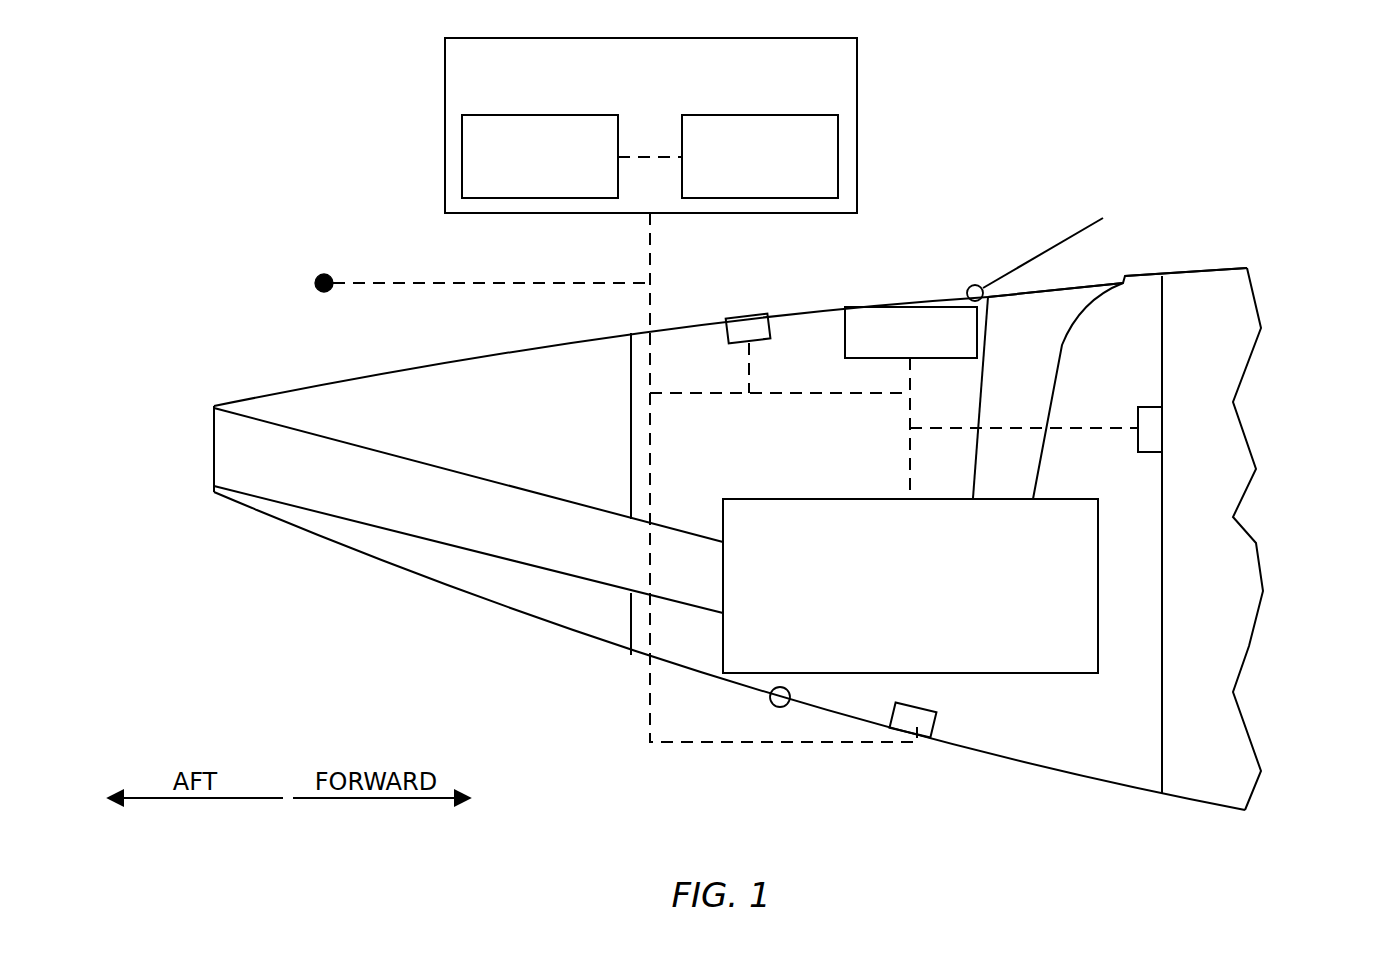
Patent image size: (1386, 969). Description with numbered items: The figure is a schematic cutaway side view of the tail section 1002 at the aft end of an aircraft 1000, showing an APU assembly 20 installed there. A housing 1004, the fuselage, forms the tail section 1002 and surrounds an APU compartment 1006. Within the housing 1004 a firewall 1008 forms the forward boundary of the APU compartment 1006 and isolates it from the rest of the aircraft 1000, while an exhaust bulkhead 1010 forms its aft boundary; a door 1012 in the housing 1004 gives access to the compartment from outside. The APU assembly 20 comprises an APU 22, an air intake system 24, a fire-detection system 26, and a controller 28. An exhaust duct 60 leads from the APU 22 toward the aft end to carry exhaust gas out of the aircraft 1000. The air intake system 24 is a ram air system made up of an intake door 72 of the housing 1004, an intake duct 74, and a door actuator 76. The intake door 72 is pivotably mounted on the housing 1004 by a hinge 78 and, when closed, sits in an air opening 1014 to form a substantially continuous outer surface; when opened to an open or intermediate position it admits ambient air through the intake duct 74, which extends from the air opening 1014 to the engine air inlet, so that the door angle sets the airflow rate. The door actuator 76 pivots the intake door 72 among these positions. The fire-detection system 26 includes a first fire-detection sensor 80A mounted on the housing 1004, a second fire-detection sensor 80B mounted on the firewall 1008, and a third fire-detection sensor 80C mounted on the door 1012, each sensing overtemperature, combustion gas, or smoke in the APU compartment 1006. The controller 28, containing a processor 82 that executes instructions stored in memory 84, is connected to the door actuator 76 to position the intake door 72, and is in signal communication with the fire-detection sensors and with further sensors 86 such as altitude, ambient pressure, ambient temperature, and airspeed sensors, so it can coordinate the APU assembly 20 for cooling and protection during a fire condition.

The APU assembly 20 is at (970, 140).
The APU 22 is at (897, 617).
The air intake system 24 is at (996, 246).
The fire-detection system 26 is at (891, 756).
The controller 28 is at (726, 91).
The exhaust duct 60 is at (434, 541).
The intake door 72 is at (1082, 228).
The intake duct 74 is at (1034, 381).
The door actuator 76 is at (867, 360).
The hinge 78 is at (970, 285).
The first fire-detection sensor 80A is at (1150, 423).
The second fire-detection sensor 80B is at (945, 735).
The third fire-detection sensor 80C is at (748, 318).
The processor 82 is at (525, 187).
The memory 84 is at (745, 187).
The sensors 86 is at (315, 283).
The aircraft 1000 is at (1295, 229).
The tail section 1002 is at (588, 675).
The housing 1004 is at (1152, 275).
The APU compartment 1006 is at (1088, 732).
The firewall 1008 is at (1163, 555).
The exhaust bulkhead 1010 is at (629, 406).
The door 1012 is at (1003, 760).
The air opening 1014 is at (1098, 272).